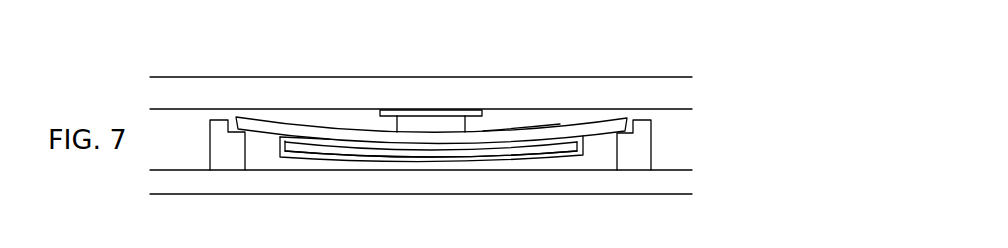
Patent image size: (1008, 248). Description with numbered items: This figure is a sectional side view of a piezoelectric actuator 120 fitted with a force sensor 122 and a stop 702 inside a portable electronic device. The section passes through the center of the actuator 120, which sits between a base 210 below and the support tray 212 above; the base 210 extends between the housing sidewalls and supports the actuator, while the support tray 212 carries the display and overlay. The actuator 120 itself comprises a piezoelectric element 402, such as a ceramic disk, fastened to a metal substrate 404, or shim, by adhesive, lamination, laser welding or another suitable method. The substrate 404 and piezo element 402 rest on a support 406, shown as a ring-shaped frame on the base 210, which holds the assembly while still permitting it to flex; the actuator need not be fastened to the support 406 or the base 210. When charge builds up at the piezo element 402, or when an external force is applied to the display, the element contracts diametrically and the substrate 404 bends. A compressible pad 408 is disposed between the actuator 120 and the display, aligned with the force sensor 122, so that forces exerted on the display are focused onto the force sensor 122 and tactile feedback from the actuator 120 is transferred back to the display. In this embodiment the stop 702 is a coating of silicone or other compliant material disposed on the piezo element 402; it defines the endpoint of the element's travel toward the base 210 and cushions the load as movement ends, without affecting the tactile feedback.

The piezo actuator 120 is at (483, 131).
The force sensor 122 is at (457, 115).
The base 210 is at (650, 182).
The support tray 212 is at (608, 83).
The piezoelectric element 402 is at (353, 151).
The substrate 404 is at (275, 123).
The support 406 is at (225, 160).
The pad 408 is at (403, 122).
The stop 702 is at (468, 160).